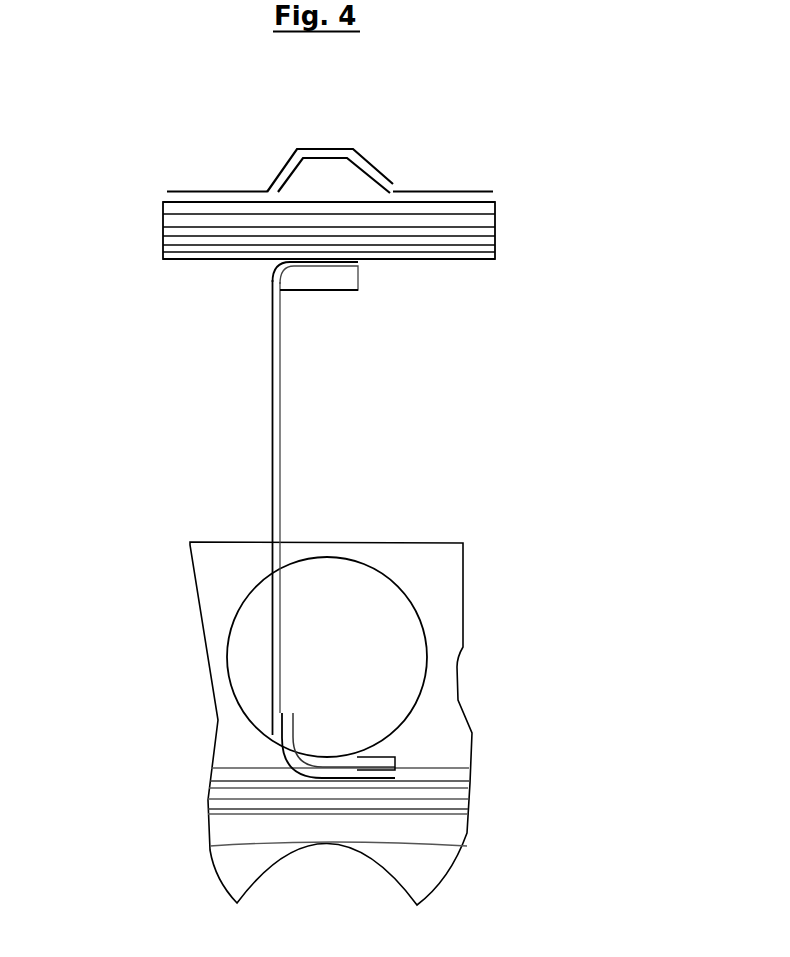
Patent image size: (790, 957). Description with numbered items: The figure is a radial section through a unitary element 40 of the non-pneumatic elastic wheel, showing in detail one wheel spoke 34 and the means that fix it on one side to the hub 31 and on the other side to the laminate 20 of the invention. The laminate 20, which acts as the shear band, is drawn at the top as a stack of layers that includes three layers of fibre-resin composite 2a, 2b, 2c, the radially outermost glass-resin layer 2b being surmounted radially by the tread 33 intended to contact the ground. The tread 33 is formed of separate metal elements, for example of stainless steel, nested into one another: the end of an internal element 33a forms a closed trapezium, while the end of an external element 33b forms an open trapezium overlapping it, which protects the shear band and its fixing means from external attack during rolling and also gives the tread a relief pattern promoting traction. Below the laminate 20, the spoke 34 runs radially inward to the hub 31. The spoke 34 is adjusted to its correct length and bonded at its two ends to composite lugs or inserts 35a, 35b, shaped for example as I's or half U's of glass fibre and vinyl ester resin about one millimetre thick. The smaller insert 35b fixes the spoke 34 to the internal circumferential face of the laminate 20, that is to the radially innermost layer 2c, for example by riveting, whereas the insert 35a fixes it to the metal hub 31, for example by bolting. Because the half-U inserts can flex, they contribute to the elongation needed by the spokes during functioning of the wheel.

The unitary element 40 is at (505, 453).
The hub 31 is at (237, 730).
The wheel spoke 34 is at (277, 437).
The insert 35a is at (357, 768).
The insert 35b is at (308, 265).
The laminate 20 is at (330, 259).
The layer of fibre-resin composite 2a is at (478, 232).
The layer of fibre-resin composite 2b is at (180, 207).
The layer of fibre-resin composite 2c is at (422, 255).
The tread 33 is at (330, 133).
The internal element 33a is at (303, 192).
The external element 33b is at (373, 162).